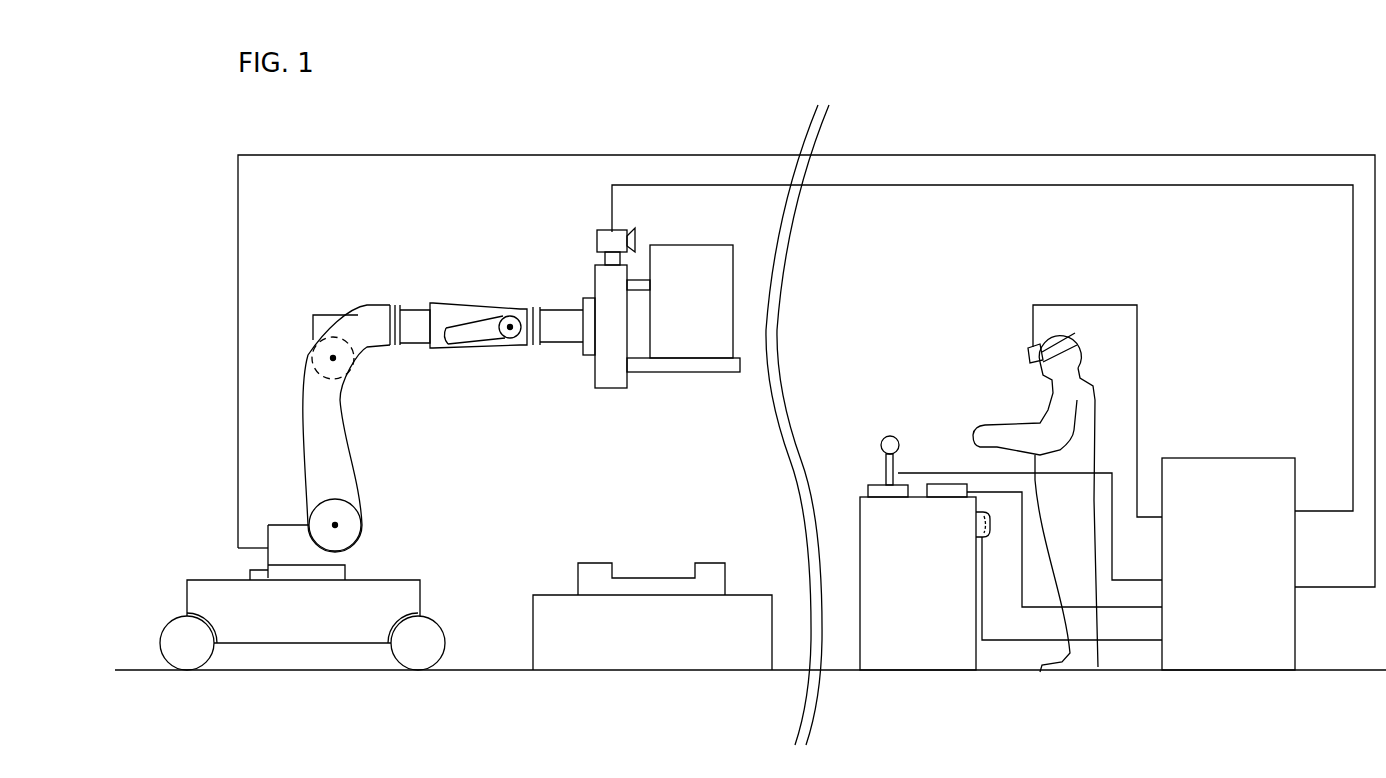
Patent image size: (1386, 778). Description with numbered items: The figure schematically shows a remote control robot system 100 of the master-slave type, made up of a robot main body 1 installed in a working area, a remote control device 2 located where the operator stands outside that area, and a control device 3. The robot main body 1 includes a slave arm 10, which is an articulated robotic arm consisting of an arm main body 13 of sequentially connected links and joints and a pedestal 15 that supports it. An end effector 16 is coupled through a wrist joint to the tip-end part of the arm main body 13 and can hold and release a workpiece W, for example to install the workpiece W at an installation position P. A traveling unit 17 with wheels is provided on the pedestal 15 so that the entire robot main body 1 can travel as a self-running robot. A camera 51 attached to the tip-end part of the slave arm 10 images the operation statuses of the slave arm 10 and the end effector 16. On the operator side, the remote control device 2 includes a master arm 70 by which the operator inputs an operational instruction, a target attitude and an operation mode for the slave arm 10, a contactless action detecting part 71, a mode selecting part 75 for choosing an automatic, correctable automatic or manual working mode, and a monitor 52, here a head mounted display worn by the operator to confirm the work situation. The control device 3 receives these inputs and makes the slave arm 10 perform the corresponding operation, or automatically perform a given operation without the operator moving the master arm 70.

The remote control robot system 100 is at (1276, 89).
The robot main body 1 is at (450, 487).
The slave arm 10 is at (422, 444).
The arm main body 13 is at (330, 405).
The pedestal 15 is at (368, 590).
The traveling unit 17 is at (310, 625).
The end effector 16 is at (612, 377).
The camera 51 is at (597, 232).
The workpiece W is at (695, 340).
The installation position P is at (648, 578).
The remote control device 2 is at (995, 488).
The monitor 52 is at (1028, 353).
The master arm 70 is at (878, 484).
The contactless action detecting part 71 is at (947, 493).
The mode selecting part 75 is at (977, 527).
The control device 3 is at (1235, 478).